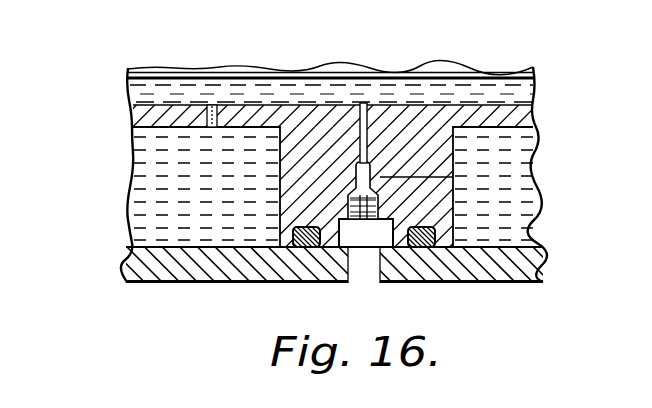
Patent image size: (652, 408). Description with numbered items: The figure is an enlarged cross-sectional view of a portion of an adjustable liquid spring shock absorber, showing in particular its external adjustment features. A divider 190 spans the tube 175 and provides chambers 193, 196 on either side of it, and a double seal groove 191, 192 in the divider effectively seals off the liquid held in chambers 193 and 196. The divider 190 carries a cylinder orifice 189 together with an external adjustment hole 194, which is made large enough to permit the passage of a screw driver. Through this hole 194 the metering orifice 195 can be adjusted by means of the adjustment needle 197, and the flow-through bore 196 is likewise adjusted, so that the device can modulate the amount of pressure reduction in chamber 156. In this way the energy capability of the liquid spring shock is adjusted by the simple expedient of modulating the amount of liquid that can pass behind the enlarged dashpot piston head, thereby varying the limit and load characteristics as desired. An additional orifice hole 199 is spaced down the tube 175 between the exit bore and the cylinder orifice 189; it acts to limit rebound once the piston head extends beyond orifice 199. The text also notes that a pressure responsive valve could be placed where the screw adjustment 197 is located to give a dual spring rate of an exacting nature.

The chamber 156 is at (487, 88).
The tube 175 is at (158, 110).
The cylinder orifice 189 is at (360, 124).
The divider 190 is at (282, 183).
The seal groove 191 is at (300, 236).
The seal groove 192 is at (436, 238).
The chamber 193 is at (510, 135).
The external adjustment hole 194 is at (375, 284).
The metering orifice 195 is at (368, 155).
The chamber / flow-through bore 196 is at (153, 148).
The adjustment needle 197 is at (290, 208).
The orifice hole 199 is at (213, 128).